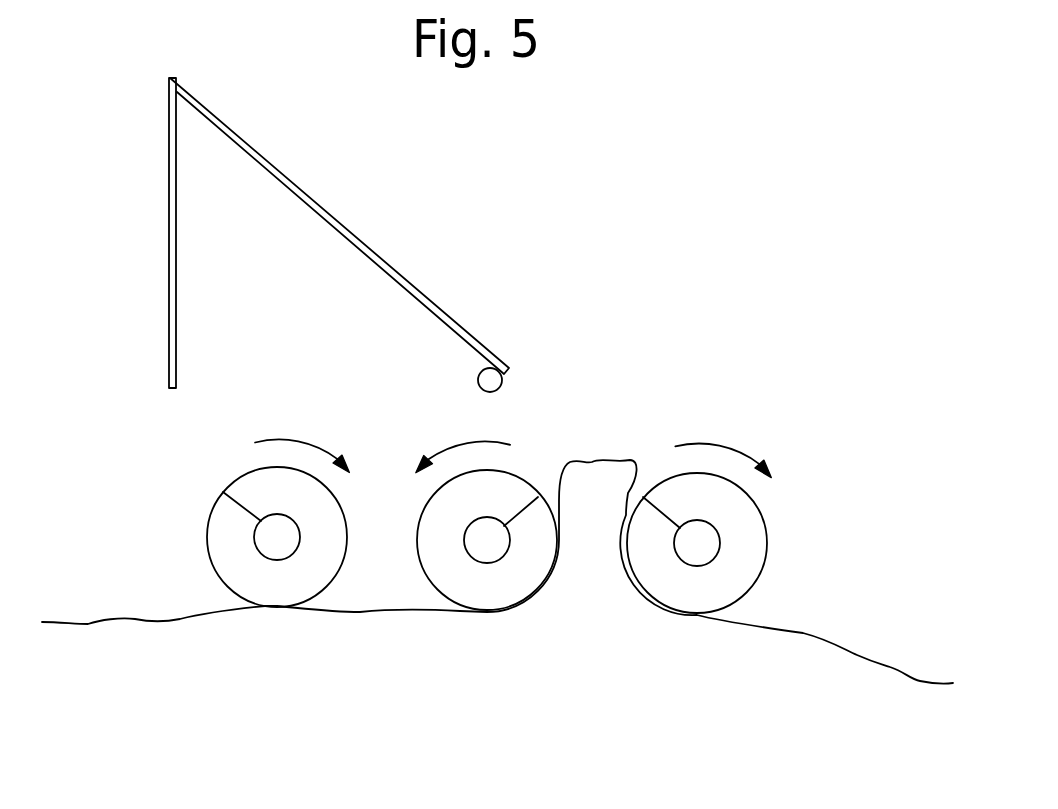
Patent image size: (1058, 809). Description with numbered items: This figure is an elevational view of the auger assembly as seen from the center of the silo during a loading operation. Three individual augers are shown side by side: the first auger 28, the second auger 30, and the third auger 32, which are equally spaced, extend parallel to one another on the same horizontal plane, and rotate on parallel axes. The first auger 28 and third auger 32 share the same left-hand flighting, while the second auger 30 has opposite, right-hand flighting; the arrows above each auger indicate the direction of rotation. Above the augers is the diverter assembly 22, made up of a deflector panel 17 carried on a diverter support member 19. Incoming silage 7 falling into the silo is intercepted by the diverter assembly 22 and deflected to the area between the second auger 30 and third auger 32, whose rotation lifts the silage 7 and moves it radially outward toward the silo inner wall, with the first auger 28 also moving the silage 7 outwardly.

The silage 7 is at (595, 476).
The deflector panel 17 is at (232, 131).
The diverter support member 19 is at (177, 188).
The diverter assembly 22 is at (339, 235).
The first auger 28 is at (278, 598).
The second auger 30 is at (535, 567).
The third auger 32 is at (687, 602).